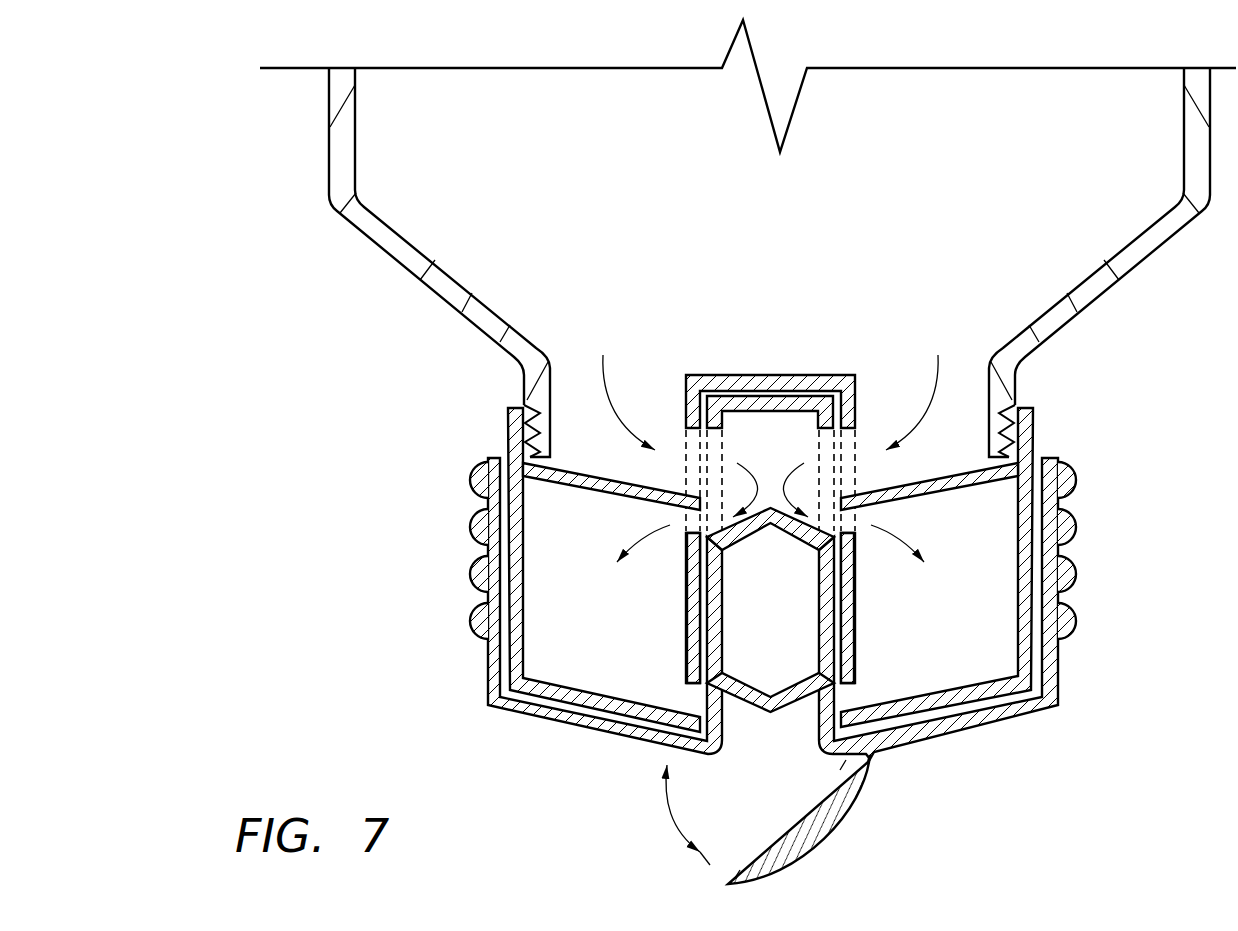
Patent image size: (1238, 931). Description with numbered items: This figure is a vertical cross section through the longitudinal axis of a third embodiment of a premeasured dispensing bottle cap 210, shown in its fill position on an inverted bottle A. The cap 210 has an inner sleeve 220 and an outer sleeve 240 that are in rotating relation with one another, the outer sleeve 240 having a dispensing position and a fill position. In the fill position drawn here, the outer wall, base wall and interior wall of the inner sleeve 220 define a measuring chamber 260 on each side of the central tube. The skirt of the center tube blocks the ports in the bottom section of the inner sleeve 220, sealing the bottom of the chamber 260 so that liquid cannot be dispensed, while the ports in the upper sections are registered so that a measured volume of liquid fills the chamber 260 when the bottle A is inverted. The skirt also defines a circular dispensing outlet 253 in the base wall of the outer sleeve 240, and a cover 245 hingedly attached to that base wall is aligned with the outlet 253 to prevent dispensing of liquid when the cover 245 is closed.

The bottle A is at (329, 174).
The cap 210 is at (435, 728).
The inner sleeve 220 is at (510, 423).
The outer sleeve 240 is at (1060, 672).
The cover 245 is at (785, 865).
The dispensing outlet 253 is at (727, 778).
The measuring chamber 260 is at (610, 650).